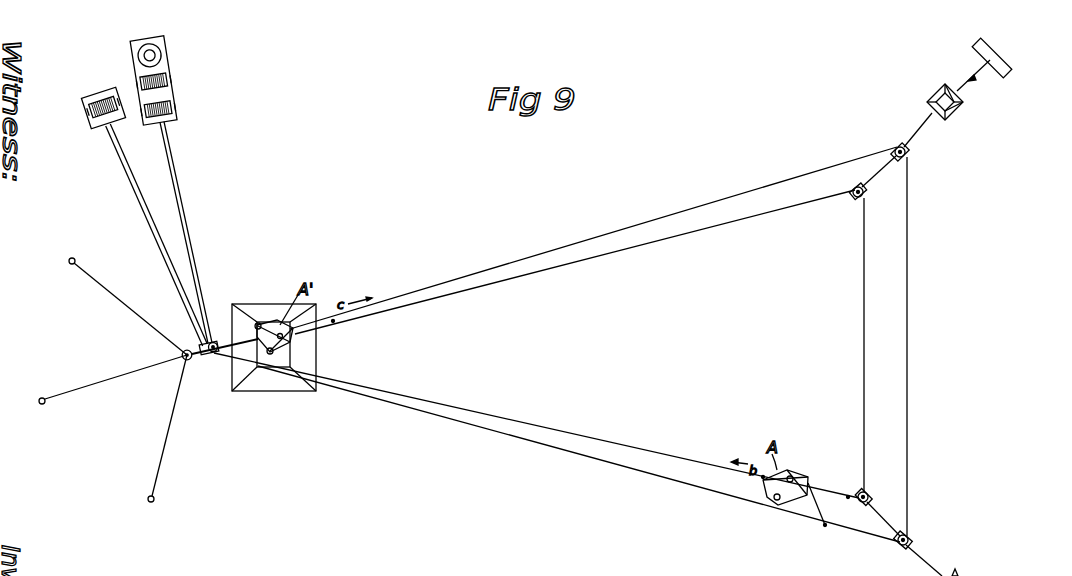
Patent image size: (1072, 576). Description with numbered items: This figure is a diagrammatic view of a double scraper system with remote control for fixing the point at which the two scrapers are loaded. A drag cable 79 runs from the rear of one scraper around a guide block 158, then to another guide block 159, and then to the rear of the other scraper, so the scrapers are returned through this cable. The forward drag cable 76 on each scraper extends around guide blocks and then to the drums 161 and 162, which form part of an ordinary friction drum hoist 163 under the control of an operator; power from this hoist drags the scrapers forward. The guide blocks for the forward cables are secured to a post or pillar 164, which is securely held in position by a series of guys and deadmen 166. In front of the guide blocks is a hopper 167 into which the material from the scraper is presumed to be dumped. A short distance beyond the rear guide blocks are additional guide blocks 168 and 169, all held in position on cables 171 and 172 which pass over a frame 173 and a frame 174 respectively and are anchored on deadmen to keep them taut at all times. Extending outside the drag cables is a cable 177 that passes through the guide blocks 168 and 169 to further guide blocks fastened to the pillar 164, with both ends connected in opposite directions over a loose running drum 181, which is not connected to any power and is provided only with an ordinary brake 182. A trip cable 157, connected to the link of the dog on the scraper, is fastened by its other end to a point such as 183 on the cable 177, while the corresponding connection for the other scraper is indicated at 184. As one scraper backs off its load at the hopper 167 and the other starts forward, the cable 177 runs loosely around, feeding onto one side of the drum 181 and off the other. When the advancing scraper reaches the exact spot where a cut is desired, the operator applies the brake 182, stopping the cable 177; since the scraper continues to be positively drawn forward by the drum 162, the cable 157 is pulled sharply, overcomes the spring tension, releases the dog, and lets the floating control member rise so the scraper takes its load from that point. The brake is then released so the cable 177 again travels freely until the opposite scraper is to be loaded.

The forward drag cable 76 is at (551, 428).
The drag cable 79 is at (827, 492).
The cable 157 is at (820, 511).
The guide block 158 is at (873, 486).
The guide block 159 is at (865, 196).
The drum 161 is at (178, 116).
The drum 162 is at (176, 80).
The friction drum hoist 163 is at (178, 97).
The post or pillar 164 is at (220, 379).
The guys and deadmen 166 is at (103, 380).
The hopper 167 is at (274, 324).
The guide block 168 is at (917, 540).
The guide block 169 is at (910, 155).
The cable 171 is at (941, 566).
The cable 172 is at (926, 123).
The frame 173 is at (978, 568).
The frame 174 is at (957, 114).
The cable 177 is at (569, 246).
The loose running drum 181 is at (90, 127).
The brake 182 is at (47, 127).
The connection point 183 is at (579, 464).
The connection point 184 is at (323, 316).